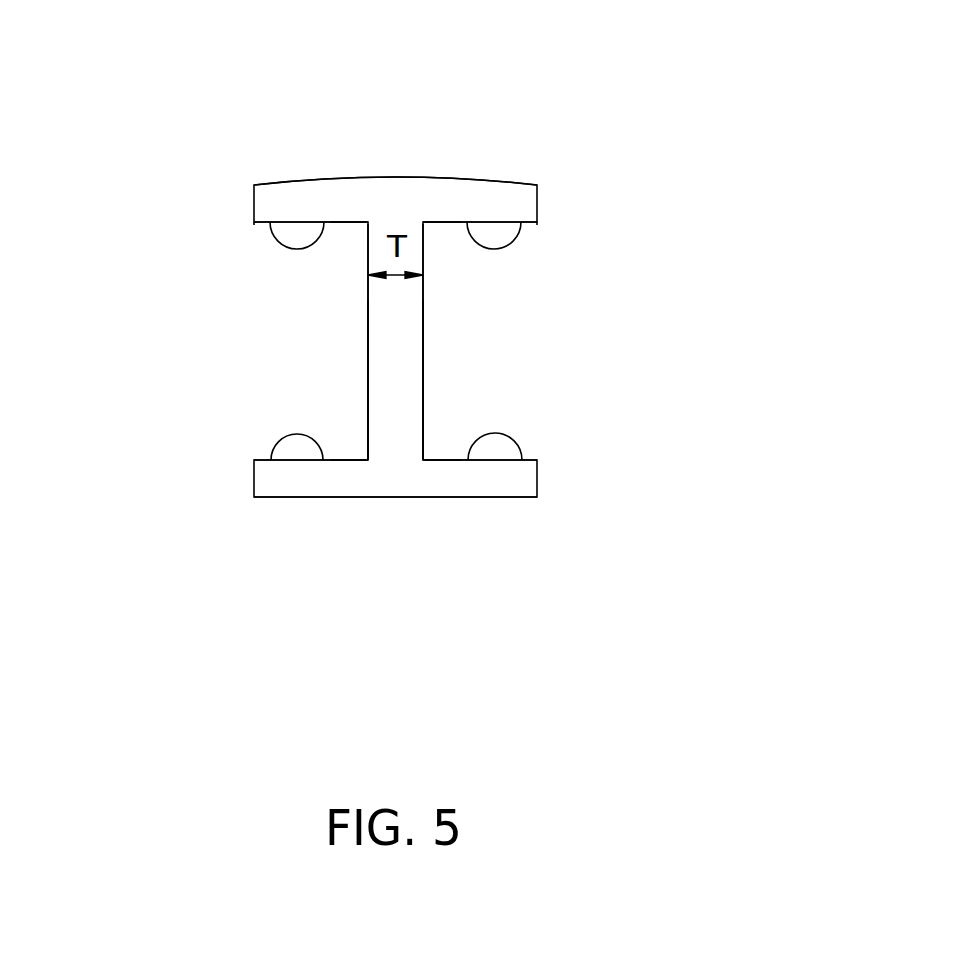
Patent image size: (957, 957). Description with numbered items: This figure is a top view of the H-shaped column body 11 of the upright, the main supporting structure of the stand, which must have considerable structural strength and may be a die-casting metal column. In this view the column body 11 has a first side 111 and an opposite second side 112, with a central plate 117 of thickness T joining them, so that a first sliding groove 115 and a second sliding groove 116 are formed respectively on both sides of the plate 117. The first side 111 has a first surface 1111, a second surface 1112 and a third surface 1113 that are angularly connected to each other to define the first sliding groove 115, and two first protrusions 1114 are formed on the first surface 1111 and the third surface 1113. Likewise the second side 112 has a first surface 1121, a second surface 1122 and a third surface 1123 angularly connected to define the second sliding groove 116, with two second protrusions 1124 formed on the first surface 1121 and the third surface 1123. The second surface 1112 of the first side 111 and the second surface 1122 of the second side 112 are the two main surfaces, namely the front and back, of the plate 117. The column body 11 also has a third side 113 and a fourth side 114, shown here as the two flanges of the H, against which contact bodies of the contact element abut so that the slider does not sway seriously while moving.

The column body 11 is at (560, 142).
The first side 111 is at (170, 293).
The second side 112 is at (640, 284).
The third side 113 is at (395, 177).
The fourth side 114 is at (487, 497).
The first sliding groove 115 is at (140, 390).
The second sliding groove 116 is at (655, 381).
The plate 117 is at (395, 423).
The first surface 1111 is at (343, 222).
The second surface 1112 is at (368, 340).
The third surface 1113 is at (343, 460).
The first protrusions 1114 is at (273, 238).
The first surface 1121 is at (448, 222).
The second surface 1122 is at (423, 343).
The third surface 1123 is at (448, 460).
The second protrusions 1124 is at (518, 242).